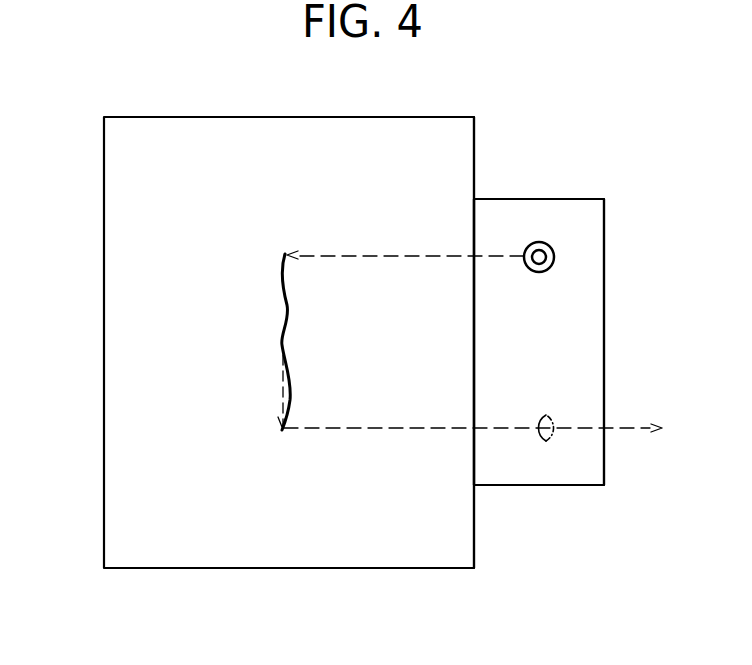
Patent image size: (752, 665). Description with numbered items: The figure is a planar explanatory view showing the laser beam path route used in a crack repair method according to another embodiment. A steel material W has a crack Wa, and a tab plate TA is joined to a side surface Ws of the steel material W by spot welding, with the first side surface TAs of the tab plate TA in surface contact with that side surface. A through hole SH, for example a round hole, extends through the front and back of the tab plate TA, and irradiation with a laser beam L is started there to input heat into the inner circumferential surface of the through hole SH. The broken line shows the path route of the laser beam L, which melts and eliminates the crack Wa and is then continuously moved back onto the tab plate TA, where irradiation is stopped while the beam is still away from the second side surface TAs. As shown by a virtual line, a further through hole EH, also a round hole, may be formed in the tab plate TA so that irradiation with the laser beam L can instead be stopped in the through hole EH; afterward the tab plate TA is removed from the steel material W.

The steel material W is at (130, 191).
The side surface of steel material Ws is at (474, 135).
The crack Wa is at (280, 345).
The tab plate TA is at (582, 212).
The side surface of tab plate TAs is at (604, 311).
The laser beam L is at (541, 242).
The through hole SH is at (546, 261).
The through hole EH is at (548, 421).